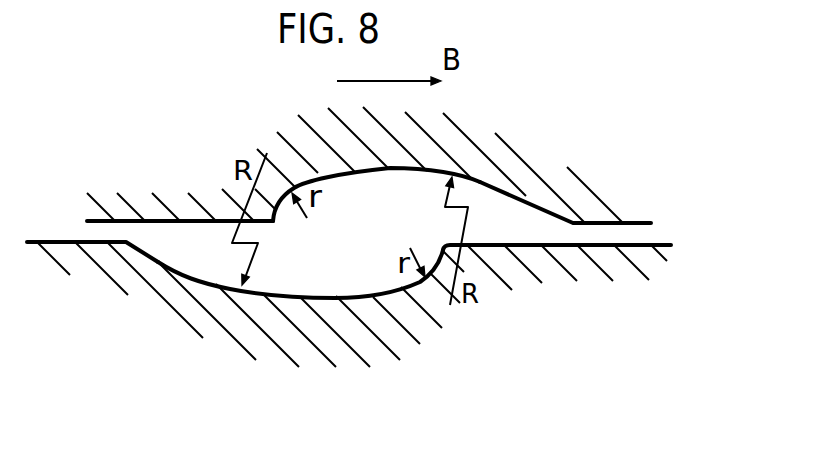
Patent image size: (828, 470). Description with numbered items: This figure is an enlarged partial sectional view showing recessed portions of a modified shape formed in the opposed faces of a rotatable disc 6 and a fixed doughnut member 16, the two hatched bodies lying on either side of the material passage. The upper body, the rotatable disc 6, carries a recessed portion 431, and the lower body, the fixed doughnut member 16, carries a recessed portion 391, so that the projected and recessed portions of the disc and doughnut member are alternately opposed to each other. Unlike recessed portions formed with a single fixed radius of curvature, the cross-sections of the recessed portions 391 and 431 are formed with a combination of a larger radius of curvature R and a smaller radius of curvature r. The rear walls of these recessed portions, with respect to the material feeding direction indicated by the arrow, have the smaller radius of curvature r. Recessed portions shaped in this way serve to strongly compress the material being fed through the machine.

The rotatable disc 6 is at (604, 189).
The recessed portion 431 is at (487, 188).
The fixed doughnut member 16 is at (616, 265).
The recessed portion 391 is at (308, 293).